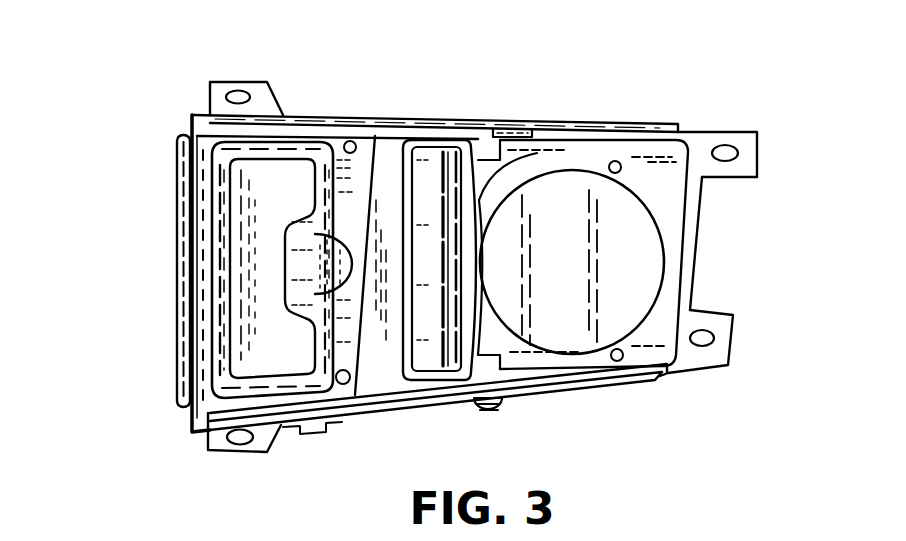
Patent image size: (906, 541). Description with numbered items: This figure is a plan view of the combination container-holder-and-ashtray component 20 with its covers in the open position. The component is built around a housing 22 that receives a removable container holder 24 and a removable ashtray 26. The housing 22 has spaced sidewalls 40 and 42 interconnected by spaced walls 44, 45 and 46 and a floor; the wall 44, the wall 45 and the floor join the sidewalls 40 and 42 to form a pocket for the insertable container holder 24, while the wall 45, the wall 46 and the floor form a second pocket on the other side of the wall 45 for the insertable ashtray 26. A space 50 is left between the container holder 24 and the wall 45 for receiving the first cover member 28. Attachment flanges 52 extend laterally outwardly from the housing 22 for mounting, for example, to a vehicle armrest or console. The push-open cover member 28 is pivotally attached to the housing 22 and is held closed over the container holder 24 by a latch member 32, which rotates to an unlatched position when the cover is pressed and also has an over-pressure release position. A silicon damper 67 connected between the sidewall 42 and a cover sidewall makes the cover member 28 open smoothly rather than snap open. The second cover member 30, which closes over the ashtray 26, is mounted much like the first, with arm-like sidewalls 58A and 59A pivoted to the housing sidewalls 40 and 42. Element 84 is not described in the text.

The combination container-holder-and-ashtray component 20 is at (778, 83).
The housing 22 is at (697, 277).
The container holder 24 is at (643, 153).
The ashtray 26 is at (292, 162).
The cover member 28 is at (537, 153).
The cover member 30 is at (178, 293).
The latch member 32 is at (507, 402).
The sidewall 40 is at (427, 412).
The sidewall 42 is at (480, 118).
The wall 44 is at (693, 242).
The wall 45 is at (393, 183).
The wall 46 is at (207, 240).
The space 50 is at (428, 187).
The attachment flanges 52 is at (219, 82).
The sidewall 58A is at (187, 413).
The sidewall 59A is at (187, 133).
The silicon damper 67 is at (512, 122).
The screw tip 84 is at (490, 417).